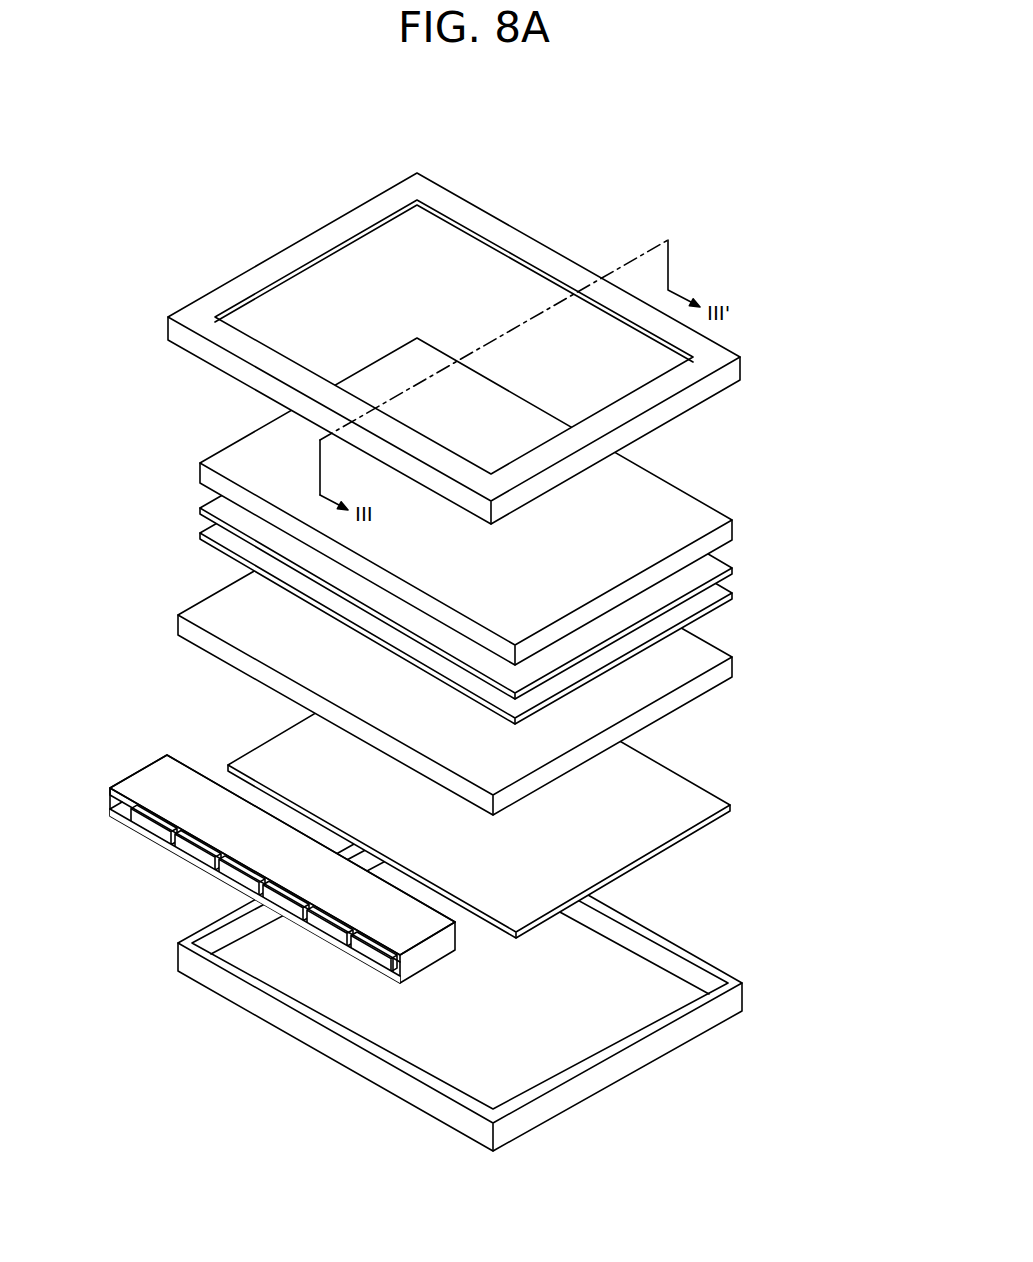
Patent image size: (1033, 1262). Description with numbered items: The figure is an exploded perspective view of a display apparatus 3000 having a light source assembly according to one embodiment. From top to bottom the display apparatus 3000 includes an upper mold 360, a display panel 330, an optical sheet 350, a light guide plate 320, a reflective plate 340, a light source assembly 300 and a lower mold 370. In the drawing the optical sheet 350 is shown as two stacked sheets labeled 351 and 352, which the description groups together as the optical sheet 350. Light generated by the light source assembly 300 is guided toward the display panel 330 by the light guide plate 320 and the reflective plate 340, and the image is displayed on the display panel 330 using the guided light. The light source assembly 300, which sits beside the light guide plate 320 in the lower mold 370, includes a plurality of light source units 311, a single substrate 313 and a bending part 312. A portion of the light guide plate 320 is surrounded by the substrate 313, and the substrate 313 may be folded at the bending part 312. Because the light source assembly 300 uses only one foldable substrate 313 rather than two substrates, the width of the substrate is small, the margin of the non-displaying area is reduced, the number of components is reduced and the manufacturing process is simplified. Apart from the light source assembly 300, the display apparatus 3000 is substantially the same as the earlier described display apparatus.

The display apparatus 3000 is at (590, 197).
The upper mold 360 is at (735, 373).
The display panel 330 is at (732, 531).
The optical sheet 350 is at (527, 553).
The first optical sheet 351 is at (732, 572).
The second optical sheet 352 is at (732, 598).
The light guide plate 320 is at (732, 668).
The reflective plate 340 is at (731, 806).
The lower mold 370 is at (735, 999).
The light source assembly 300 is at (316, 894).
The light source units 311 is at (143, 818).
The bending part 312 is at (289, 894).
The substrate 313 is at (420, 931).